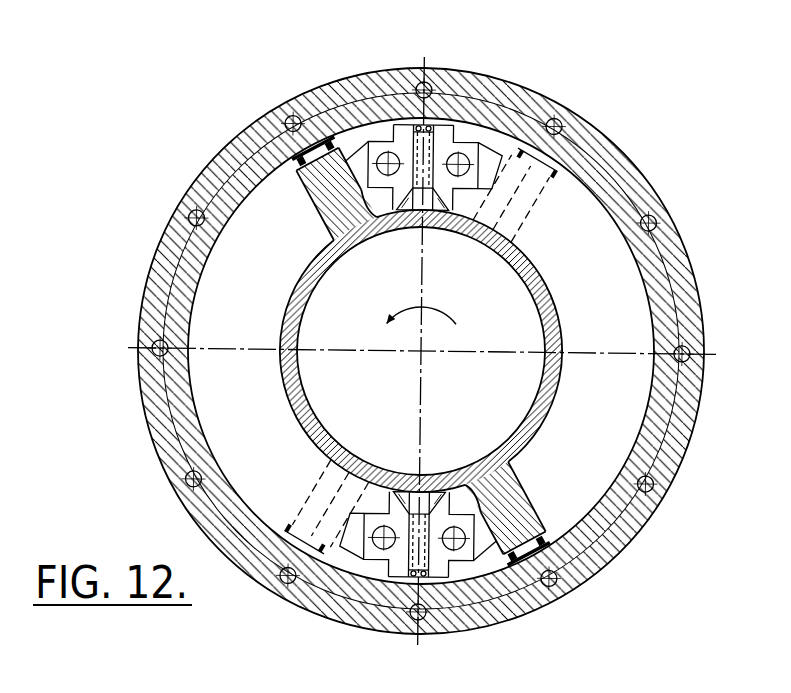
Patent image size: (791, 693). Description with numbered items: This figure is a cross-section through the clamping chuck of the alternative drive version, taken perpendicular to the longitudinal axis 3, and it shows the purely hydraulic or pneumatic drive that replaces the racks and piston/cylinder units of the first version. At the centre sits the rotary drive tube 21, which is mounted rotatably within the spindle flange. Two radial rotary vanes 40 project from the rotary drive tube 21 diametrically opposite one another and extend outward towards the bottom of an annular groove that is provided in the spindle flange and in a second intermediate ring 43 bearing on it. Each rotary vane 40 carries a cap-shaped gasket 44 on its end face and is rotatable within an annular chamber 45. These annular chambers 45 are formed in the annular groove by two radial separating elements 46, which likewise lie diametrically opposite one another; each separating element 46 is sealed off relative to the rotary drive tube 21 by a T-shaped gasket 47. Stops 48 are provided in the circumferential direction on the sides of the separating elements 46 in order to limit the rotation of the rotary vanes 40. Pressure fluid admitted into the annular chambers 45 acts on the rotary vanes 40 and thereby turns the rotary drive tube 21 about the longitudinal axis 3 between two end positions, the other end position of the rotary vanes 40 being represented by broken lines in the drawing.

The longitudinal axis 3 is at (422, 353).
The rotary drive tube 21 is at (552, 382).
The radial rotary vanes 40 is at (315, 143).
The second intermediate ring 43 is at (608, 172).
The cap-shaped gasket 44 is at (296, 160).
The annular chamber 45 is at (242, 307).
The radial separating elements 46 is at (442, 150).
The T-shaped gasket 47 is at (428, 215).
The stops 48 is at (366, 548).